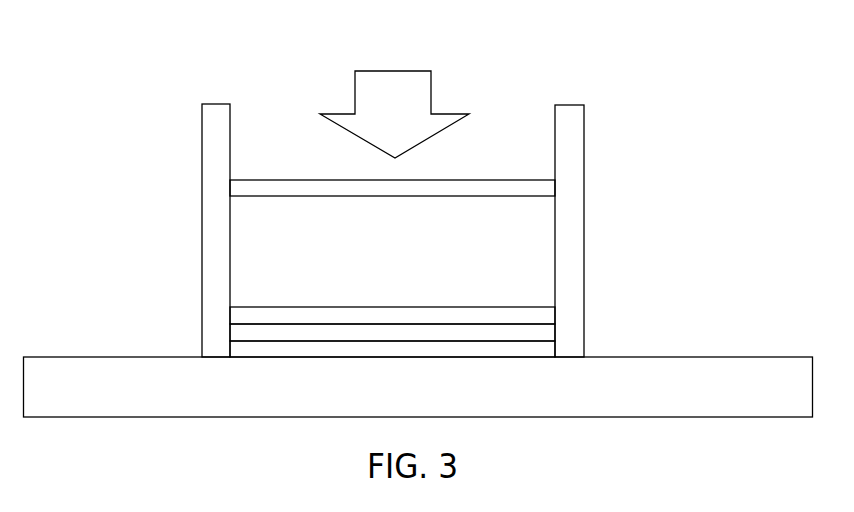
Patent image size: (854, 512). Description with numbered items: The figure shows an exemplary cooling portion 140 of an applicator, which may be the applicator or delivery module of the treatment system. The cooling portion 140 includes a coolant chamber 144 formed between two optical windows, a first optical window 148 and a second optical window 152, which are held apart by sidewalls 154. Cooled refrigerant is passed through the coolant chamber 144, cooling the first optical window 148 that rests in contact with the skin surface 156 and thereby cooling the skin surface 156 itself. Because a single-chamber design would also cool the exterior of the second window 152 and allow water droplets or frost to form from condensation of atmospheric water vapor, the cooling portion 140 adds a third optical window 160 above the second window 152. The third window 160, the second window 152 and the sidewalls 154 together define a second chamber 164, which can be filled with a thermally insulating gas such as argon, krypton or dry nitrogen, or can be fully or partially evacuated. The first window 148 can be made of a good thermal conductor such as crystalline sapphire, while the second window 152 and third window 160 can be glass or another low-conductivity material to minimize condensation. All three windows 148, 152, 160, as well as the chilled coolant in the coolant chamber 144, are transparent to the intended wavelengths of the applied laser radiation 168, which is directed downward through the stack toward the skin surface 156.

The cooling portion 140 is at (150, 125).
The coolant chamber 144 is at (238, 332).
The first optical window 148 is at (548, 350).
The second optical window 152 is at (548, 313).
The sidewalls 154 is at (215, 227).
The skin surface 156 is at (669, 367).
The third optical window 160 is at (547, 190).
The second chamber 164 is at (238, 267).
The applied laser radiation 168 is at (395, 83).